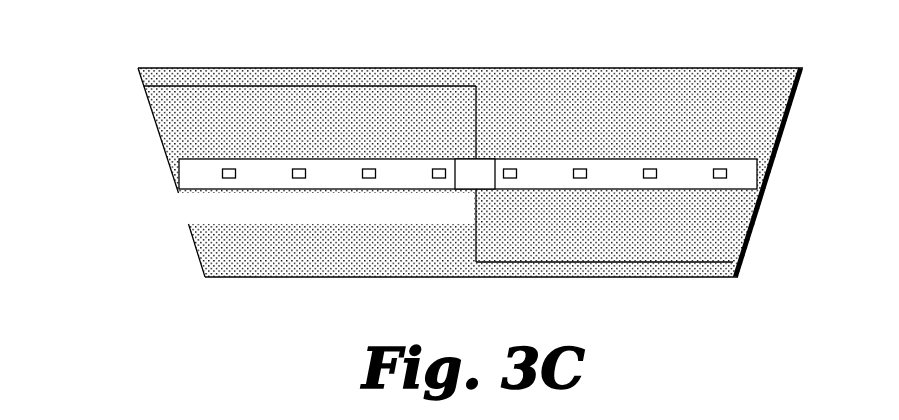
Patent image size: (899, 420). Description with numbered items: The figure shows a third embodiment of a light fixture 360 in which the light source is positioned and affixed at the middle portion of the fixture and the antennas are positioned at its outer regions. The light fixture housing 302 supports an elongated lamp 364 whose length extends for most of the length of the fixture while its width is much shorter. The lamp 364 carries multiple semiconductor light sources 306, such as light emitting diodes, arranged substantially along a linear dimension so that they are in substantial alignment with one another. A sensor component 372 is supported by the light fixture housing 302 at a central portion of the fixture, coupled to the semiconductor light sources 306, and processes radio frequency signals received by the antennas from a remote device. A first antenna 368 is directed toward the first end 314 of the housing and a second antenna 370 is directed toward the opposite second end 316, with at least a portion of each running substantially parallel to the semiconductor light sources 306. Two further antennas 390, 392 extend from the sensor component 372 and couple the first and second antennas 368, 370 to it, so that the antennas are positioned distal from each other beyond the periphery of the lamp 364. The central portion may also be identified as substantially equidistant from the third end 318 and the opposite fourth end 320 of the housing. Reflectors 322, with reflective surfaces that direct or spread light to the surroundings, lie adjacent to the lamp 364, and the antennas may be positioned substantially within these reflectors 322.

The light fixture 360 is at (133, 47).
The light fixture housing 302 is at (228, 228).
The semiconductor light sources 306 is at (742, 135).
The first end 314 is at (158, 130).
The second end 316 is at (757, 205).
The third end 318 is at (697, 68).
The fourth end 320 is at (277, 280).
The reflector 322 is at (418, 77).
The lamp 364 is at (178, 175).
The first antenna 368 is at (350, 85).
The second antenna 370 is at (625, 263).
The sensor component 372 is at (475, 173).
The antenna 390 is at (484, 159).
The antenna 392 is at (476, 227).